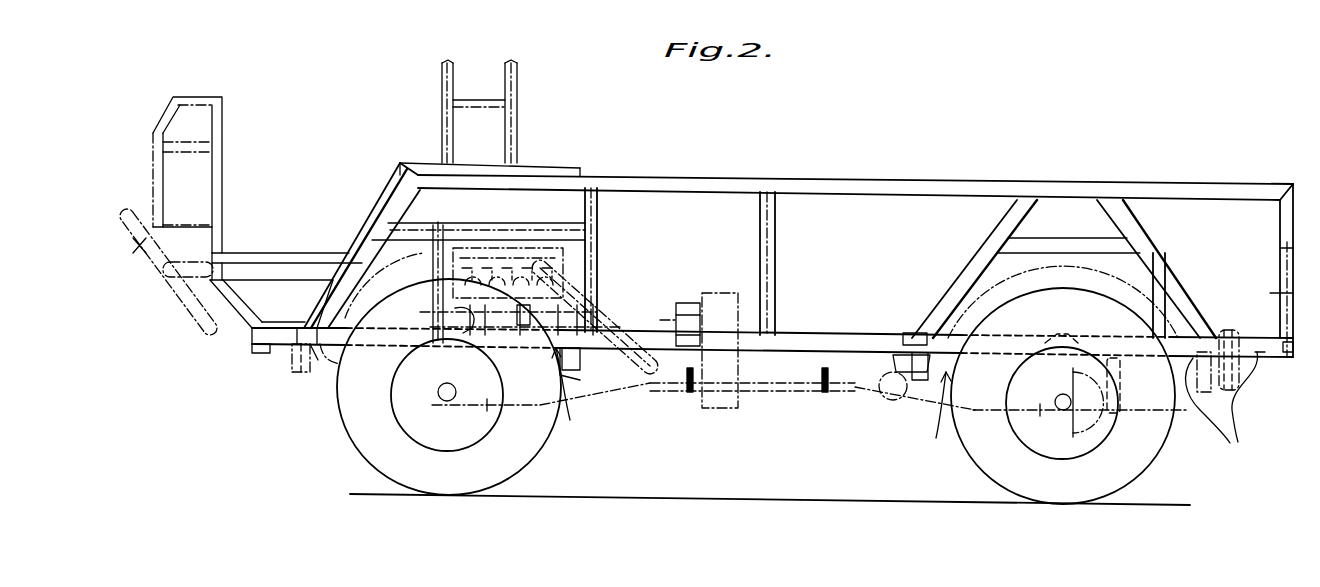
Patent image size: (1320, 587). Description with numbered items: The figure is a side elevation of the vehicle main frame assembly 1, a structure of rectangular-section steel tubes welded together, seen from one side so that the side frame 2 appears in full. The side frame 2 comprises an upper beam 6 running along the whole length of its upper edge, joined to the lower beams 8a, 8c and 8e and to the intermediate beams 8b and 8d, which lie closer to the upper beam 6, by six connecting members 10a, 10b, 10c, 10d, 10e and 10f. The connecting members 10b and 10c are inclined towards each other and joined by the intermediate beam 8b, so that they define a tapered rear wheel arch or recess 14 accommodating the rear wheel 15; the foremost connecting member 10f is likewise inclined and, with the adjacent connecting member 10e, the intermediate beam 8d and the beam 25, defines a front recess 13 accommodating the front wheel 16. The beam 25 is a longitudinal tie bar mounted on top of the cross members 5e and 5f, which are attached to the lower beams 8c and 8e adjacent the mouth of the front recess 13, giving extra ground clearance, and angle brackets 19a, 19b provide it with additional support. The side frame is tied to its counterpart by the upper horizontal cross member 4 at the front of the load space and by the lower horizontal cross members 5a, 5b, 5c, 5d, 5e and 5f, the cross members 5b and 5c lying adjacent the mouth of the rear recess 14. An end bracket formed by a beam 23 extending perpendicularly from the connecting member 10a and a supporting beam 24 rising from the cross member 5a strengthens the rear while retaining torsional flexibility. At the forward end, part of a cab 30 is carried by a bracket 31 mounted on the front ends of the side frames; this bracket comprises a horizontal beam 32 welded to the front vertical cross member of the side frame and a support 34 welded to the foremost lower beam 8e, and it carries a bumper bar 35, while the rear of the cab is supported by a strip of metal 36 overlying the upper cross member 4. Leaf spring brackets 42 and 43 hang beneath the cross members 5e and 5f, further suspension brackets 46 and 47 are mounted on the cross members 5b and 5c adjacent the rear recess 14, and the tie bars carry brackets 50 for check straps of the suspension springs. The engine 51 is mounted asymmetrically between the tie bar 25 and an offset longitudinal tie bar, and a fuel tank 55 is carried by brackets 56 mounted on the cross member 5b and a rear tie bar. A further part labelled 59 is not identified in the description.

The vehicle main frame assembly 1 is at (358, 186).
The side frame 2 is at (1168, 182).
The upper horizontal cross member 4 is at (598, 180).
The upper beam 6 is at (743, 180).
The connecting member 10a is at (1287, 221).
The connecting member 10b is at (1140, 217).
The connecting member 10c is at (977, 276).
The connecting member 10d is at (776, 258).
The connecting member 10e is at (604, 212).
The connecting member 10f is at (365, 246).
The front arch or recess 13 is at (571, 395).
The tapered wheel arch or recess 14 is at (934, 419).
The rear wheel 15 is at (975, 472).
The front wheel 16 is at (348, 447).
The angle bracket 19a is at (330, 330).
The angle bracket 19b is at (580, 362).
The beam 23 is at (1284, 252).
The supporting beam 24 is at (1290, 295).
The lower beam or tie bar 25 is at (378, 305).
The cab 30 is at (235, 186).
The bracket 31 is at (240, 307).
The horizontal beam 32 is at (280, 272).
The support 34 is at (266, 352).
The bumper bar 35 is at (138, 250).
The strip of metal 36 is at (586, 174).
The suspension bracket 42 is at (694, 378).
The suspension bracket 43 is at (313, 353).
The suspension bracket 46 is at (1241, 408).
The suspension bracket 47 is at (887, 395).
The bracket 50 is at (1076, 338).
The engine 51 is at (546, 236).
The fuel tank 55 is at (1174, 406).
The bracket 56 is at (1130, 360).
The front step 59 is at (288, 346).
The lower horizontal cross member 5a is at (1268, 358).
The lower horizontal cross member 5b is at (1228, 324).
The lower horizontal cross member 5c is at (906, 335).
The lower horizontal cross member 5d is at (766, 358).
The lower horizontal cross member 5e is at (612, 330).
The lower horizontal cross member 5f is at (333, 345).
The lower beam 8a is at (1258, 352).
The intermediate beam 8b is at (1046, 249).
The lower beam 8c is at (866, 352).
The intermediate beam 8d is at (475, 226).
The lower beam 8e is at (296, 355).